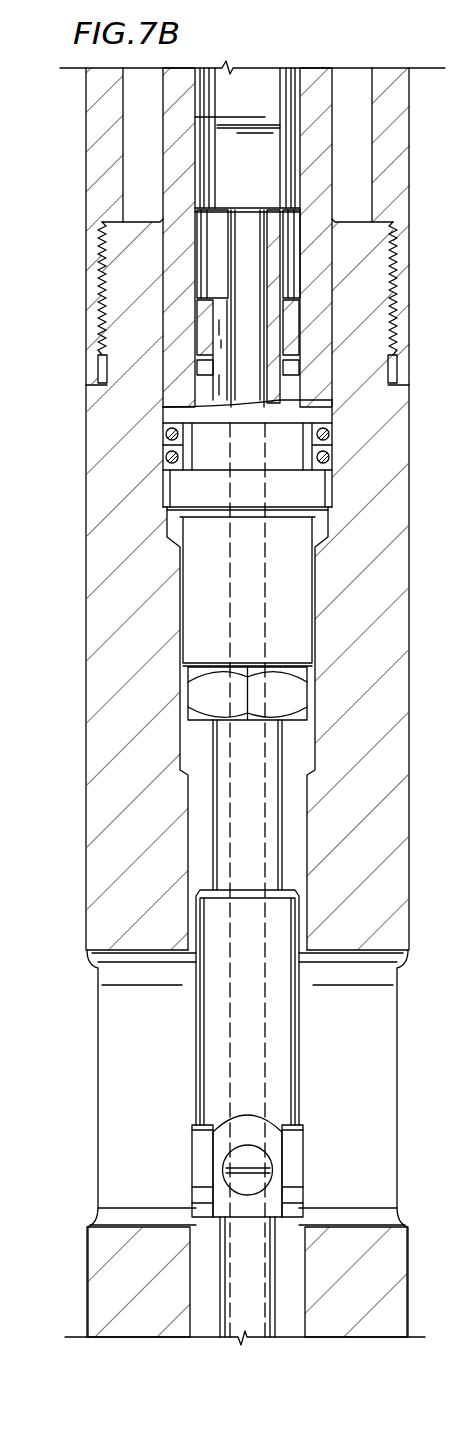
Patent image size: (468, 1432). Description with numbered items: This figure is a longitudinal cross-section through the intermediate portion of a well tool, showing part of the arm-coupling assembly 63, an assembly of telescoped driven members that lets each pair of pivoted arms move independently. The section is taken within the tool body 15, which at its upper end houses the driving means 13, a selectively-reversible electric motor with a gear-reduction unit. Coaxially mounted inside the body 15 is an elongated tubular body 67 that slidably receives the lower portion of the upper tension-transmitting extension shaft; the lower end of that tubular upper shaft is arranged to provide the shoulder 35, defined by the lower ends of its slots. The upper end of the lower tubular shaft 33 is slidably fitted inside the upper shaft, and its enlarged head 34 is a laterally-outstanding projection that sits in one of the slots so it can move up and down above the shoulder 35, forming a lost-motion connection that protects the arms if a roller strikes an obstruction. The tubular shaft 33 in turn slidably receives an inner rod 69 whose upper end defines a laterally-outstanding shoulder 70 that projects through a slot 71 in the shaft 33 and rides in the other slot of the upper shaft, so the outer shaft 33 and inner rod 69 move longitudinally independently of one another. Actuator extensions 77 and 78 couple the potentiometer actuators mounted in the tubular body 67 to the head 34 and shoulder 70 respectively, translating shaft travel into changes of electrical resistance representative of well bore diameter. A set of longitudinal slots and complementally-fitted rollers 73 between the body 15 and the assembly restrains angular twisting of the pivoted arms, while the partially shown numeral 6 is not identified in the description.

The well tool 6 is at (463, 440).
The driving means 13 is at (60, 202).
The body 15 is at (393, 150).
The tubular shaft 33 is at (276, 332).
The enlarged head 34 is at (292, 270).
The shoulder 35 is at (207, 333).
The arm-coupling assembly 63 is at (433, 438).
The tubular body 67 is at (318, 120).
The rod 69 is at (243, 353).
The shoulder 70 is at (207, 255).
The slot 71 is at (222, 405).
The longitudinal slots and complementally-fitted rollers 73 is at (298, 1162).
The actuator extension 77 is at (282, 178).
The actuator extension 78 is at (212, 105).